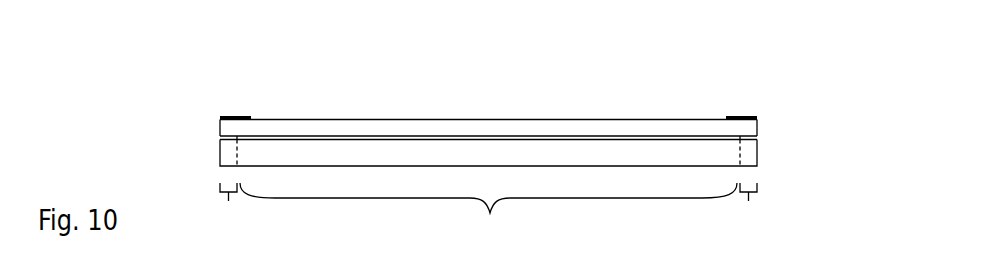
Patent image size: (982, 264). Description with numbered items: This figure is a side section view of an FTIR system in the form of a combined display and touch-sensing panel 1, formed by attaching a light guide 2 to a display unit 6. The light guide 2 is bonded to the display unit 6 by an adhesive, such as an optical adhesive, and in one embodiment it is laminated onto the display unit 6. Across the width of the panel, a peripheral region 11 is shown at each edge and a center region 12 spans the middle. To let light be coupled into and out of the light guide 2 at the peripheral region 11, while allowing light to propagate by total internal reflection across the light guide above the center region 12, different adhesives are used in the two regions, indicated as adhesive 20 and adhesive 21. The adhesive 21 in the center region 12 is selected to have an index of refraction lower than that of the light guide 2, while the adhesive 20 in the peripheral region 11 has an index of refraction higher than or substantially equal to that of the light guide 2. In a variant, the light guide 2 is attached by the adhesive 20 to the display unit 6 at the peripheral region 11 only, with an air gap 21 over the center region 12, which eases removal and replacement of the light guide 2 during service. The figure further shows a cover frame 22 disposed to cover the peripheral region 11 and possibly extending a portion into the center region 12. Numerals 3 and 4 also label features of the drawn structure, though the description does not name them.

The combined display and touch-sensing panel 1 is at (589, 56).
The light guide 2 is at (613, 128).
The top surface 3 is at (407, 120).
The upper layer 4 is at (342, 134).
The display unit 6 is at (726, 154).
The peripheral region 11 is at (490, 185).
The center region 12 is at (488, 212).
The adhesive 20 is at (231, 138).
The adhesive 21 is at (482, 137).
The cover frame 22 is at (239, 115).